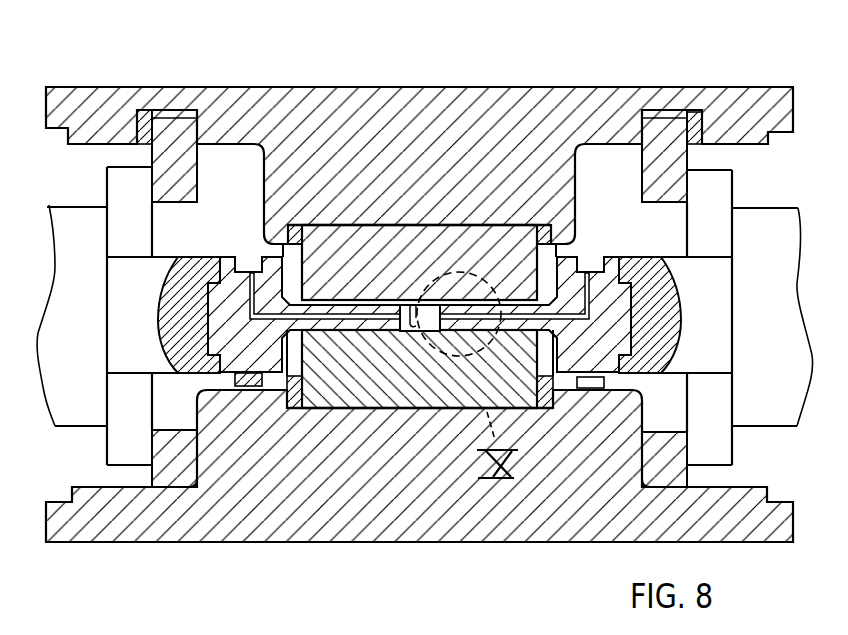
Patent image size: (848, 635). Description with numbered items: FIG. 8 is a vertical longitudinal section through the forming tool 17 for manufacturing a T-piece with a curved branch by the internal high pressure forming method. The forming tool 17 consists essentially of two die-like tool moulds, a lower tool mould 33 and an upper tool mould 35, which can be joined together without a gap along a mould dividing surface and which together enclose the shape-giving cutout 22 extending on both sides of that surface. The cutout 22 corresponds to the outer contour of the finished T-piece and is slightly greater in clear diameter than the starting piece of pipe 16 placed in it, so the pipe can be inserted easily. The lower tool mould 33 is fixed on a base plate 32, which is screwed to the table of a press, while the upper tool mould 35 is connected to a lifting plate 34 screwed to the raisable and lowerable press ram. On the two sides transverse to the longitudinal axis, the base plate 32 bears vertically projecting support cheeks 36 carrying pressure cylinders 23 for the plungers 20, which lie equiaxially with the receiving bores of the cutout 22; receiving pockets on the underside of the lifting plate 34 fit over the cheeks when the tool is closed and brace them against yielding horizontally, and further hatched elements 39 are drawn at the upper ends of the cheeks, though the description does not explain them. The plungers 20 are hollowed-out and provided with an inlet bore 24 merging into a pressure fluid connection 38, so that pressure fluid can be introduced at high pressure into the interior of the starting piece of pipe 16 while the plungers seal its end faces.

The starting piece of pipe 16 is at (407, 300).
The forming tool 17 is at (138, 83).
The plunger 20 is at (225, 293).
The cutout 22 is at (405, 332).
The pressure cylinder 23 is at (97, 282).
The inlet bore 24 is at (565, 322).
The base plate 32 is at (270, 522).
The lower tool mould 33 is at (513, 380).
The lifting plate 34 is at (502, 115).
The upper tool mould 35 is at (362, 262).
The support cheek 36 is at (160, 157).
The pressure fluid connection 38 is at (587, 262).
The bearing 39 is at (185, 115).